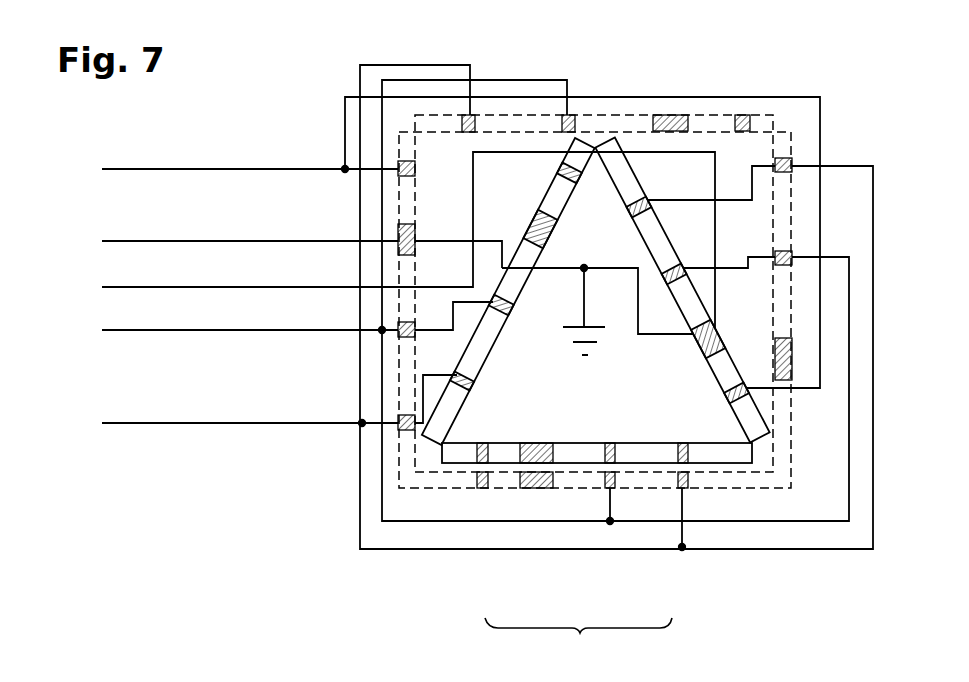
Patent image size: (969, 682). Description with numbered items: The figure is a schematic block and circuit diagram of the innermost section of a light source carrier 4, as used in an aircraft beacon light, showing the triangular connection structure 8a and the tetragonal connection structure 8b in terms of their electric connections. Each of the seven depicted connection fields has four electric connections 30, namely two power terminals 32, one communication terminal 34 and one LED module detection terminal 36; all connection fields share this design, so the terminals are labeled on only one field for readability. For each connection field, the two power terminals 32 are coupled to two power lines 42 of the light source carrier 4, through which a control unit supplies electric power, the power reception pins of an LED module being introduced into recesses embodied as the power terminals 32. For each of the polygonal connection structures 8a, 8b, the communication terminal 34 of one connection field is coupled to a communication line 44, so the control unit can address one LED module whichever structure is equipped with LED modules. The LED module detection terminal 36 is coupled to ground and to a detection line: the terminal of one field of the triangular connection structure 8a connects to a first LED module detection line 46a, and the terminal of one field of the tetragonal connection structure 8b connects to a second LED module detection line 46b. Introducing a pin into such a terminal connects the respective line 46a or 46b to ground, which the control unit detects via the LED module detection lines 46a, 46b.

The light source carrier 4 is at (818, 72).
The triangular connection structure 8a is at (722, 453).
The tetragonal connection structure 8b is at (790, 455).
The electric connections 30 is at (578, 644).
The power terminals 32 is at (615, 480).
The communication terminal 34 is at (488, 477).
The LED module detection terminal 36 is at (553, 478).
The power lines 42 is at (235, 332).
The communication line 44 is at (163, 168).
The first LED module detection line 46a is at (147, 288).
The second LED module detection line 46b is at (232, 240).